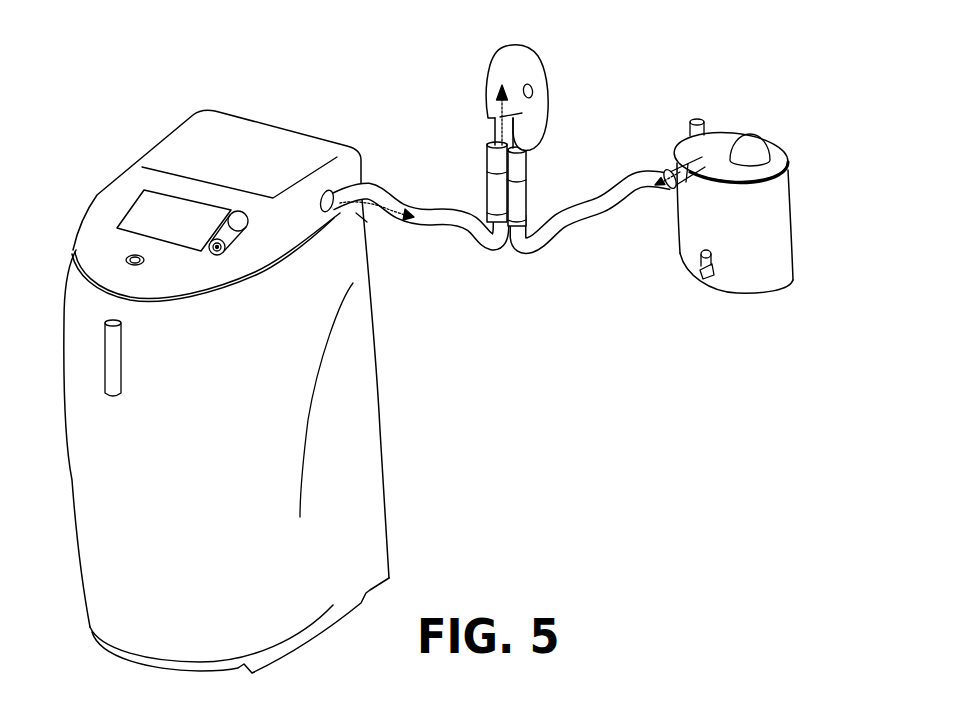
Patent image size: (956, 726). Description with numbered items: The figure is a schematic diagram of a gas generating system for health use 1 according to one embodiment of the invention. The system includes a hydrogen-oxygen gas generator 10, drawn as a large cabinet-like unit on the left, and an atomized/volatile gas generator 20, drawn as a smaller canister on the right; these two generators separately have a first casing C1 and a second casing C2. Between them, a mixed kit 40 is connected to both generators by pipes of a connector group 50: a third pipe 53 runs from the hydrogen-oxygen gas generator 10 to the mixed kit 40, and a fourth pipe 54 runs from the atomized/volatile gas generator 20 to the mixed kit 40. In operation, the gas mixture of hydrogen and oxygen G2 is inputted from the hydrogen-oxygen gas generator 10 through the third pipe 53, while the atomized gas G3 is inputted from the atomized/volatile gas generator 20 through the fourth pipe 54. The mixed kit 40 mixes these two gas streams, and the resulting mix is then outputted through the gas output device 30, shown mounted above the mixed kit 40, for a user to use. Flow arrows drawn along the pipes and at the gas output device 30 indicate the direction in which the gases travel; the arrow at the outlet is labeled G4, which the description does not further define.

The gas generating system for health use 1 is at (75, 110).
The hydrogen-oxygen gas generator 10 is at (383, 520).
The atomized/volatile gas generator 20 is at (723, 130).
The gas output device 30 is at (495, 72).
The mixed kit 40 is at (489, 171).
The connector group 50 is at (587, 283).
The third pipe 53 is at (471, 241).
The fourth pipe 54 is at (588, 223).
The first casing C1 is at (381, 430).
The second casing C2 is at (793, 235).
The gas mixture of hydrogen and oxygen G2 is at (343, 194).
The atomized gas G3 is at (670, 175).
The gas flow out of cannula G4 is at (496, 131).